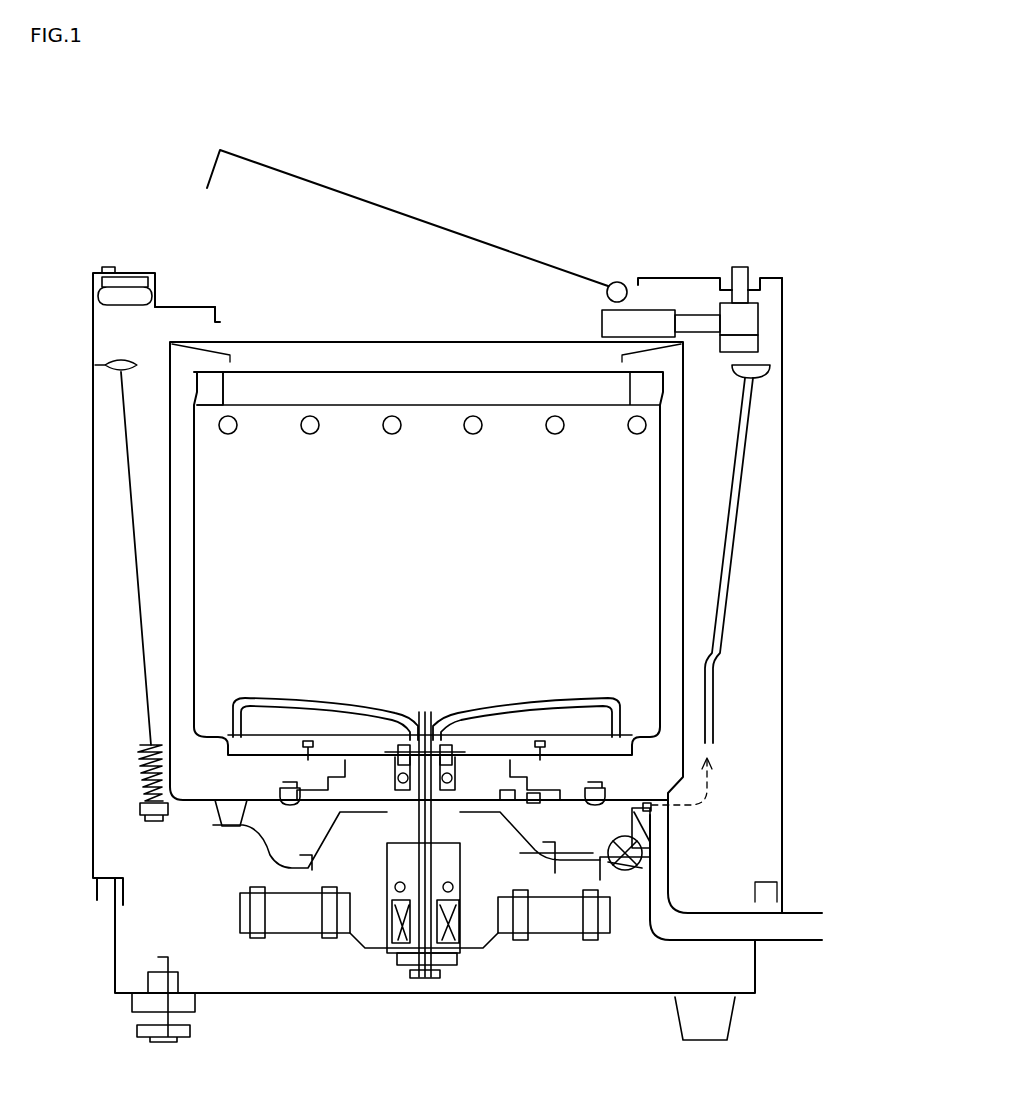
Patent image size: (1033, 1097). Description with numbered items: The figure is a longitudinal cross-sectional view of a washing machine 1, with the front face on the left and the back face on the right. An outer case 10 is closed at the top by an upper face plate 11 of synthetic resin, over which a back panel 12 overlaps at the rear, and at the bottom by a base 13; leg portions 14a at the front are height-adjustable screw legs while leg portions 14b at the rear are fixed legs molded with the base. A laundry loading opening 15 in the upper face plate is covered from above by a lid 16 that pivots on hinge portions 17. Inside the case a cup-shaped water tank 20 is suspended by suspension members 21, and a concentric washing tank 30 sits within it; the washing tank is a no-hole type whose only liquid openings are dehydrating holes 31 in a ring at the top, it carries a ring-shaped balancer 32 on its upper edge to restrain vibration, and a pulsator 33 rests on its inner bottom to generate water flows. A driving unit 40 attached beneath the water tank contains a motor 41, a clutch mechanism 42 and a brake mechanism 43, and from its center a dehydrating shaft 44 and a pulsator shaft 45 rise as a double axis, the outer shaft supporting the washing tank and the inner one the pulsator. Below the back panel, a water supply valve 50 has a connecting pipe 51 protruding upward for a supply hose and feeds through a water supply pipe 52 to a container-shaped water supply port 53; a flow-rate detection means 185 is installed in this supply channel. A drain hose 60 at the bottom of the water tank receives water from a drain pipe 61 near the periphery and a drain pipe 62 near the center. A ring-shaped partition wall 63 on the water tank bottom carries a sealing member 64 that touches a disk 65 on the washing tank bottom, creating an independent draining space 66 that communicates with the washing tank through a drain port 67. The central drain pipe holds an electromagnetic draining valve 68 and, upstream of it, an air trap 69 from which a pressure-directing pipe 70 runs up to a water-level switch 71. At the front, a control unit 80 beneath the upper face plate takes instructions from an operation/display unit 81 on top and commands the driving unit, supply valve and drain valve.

The washing machine 1 is at (106, 146).
The outer case 10 is at (94, 382).
The upper face plate 11 is at (183, 306).
The back panel 12 is at (660, 278).
The base 13 is at (115, 936).
The leg portion 14a is at (137, 1035).
The leg portion 14b is at (735, 1025).
The laundry loading opening 15 is at (222, 318).
The lid 16 is at (420, 220).
The hinge portion 17 is at (615, 281).
The water tank 20 is at (170, 455).
The suspension member 21 is at (131, 520).
The washing tank 30 is at (194, 490).
The dehydrating hole 31 is at (311, 434).
The balancer 32 is at (228, 395).
The pulsator 33 is at (272, 696).
The driving unit 40 is at (232, 926).
The motor 41 is at (285, 915).
The clutch mechanism 42 is at (393, 950).
The brake mechanism 43 is at (540, 880).
The dehydrating shaft 44 is at (390, 775).
The pulsator shaft 45 is at (418, 770).
The water supply valve 50 is at (760, 320).
The connecting pipe 51 is at (742, 267).
The water supply pipe 52 is at (698, 314).
The water supply port 53 is at (602, 324).
The drain hose 60 is at (712, 941).
The drain pipe 61 is at (670, 828).
The drain pipe 62 is at (624, 871).
The partition wall 63 is at (562, 783).
The sealing member 64 is at (507, 792).
The disk 65 is at (533, 795).
The draining space 66 is at (358, 792).
The drain port 67 is at (473, 750).
The draining valve 68 is at (636, 860).
The air trap 69 is at (640, 818).
The pressure-directing pipe 70 is at (712, 640).
The water-level switch 71 is at (770, 372).
The control unit 80 is at (128, 306).
The operation/display unit 81 is at (124, 267).
The flow-rate detection means 185 is at (760, 347).